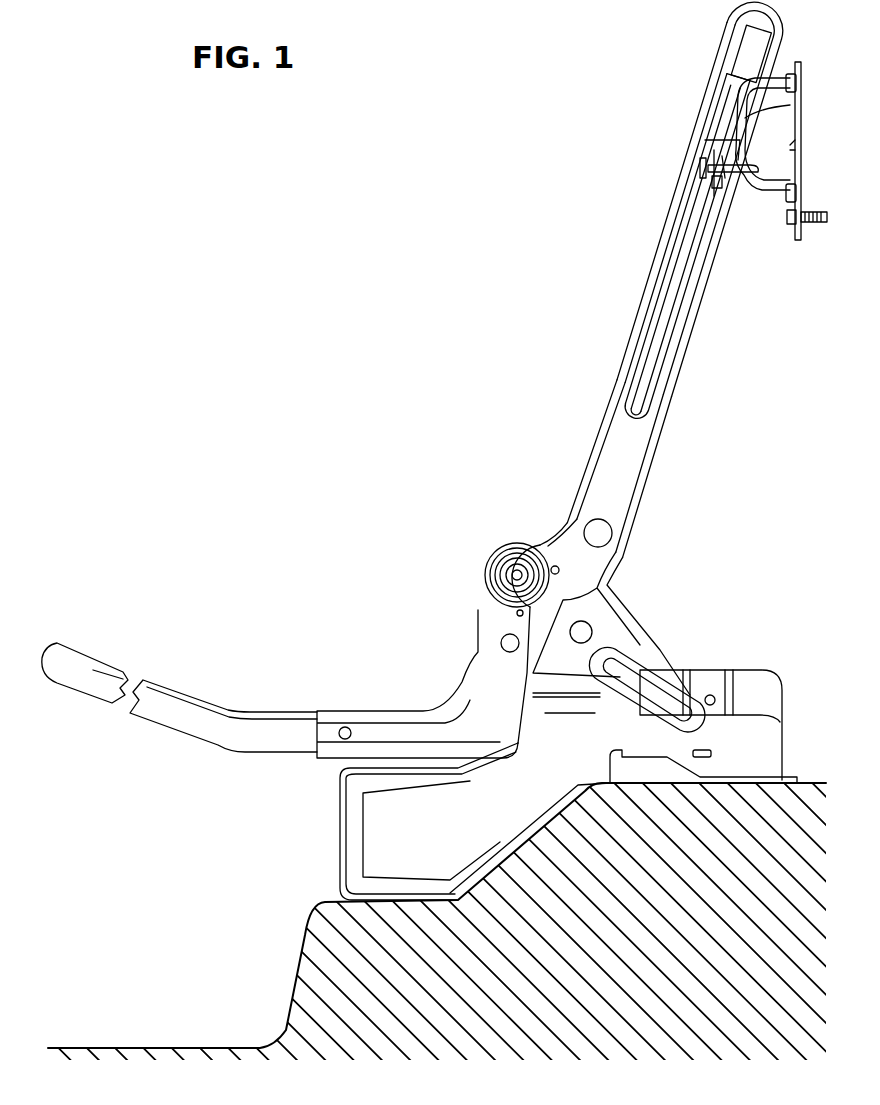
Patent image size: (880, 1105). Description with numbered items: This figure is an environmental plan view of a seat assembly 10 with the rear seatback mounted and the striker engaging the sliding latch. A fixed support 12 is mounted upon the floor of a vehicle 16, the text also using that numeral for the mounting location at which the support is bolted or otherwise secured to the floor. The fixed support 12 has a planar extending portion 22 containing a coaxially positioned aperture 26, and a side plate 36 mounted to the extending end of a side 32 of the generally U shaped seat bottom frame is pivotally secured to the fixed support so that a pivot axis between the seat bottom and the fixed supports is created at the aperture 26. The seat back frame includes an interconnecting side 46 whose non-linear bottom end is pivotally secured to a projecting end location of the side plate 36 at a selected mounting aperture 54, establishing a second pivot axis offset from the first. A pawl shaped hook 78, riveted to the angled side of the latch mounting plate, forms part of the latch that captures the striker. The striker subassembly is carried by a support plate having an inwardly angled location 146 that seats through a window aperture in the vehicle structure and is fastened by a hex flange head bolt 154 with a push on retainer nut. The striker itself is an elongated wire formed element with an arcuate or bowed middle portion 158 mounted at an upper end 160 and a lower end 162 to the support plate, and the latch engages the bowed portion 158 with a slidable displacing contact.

The seat assembly 10 is at (428, 338).
The fixed support 12 is at (372, 832).
The floor of a vehicle 16 is at (817, 785).
The planar extending portion 22 is at (617, 650).
The coaxially positioned aperture 26 is at (581, 632).
The side of seat bottom frame 32 is at (175, 722).
The side plate 36 is at (492, 678).
The first interconnecting side of seat back frame 46 is at (627, 430).
The mounting aperture 54 is at (517, 575).
The pawl shaped hook 78 is at (760, 176).
The inwardly angled location of support plate 146 is at (806, 138).
The hex flange head bolt 154 is at (790, 226).
The arcuate or bowed middle portion of striker 158 is at (752, 100).
The upper end of striker 160 is at (781, 72).
The lower end of striker 162 is at (775, 200).